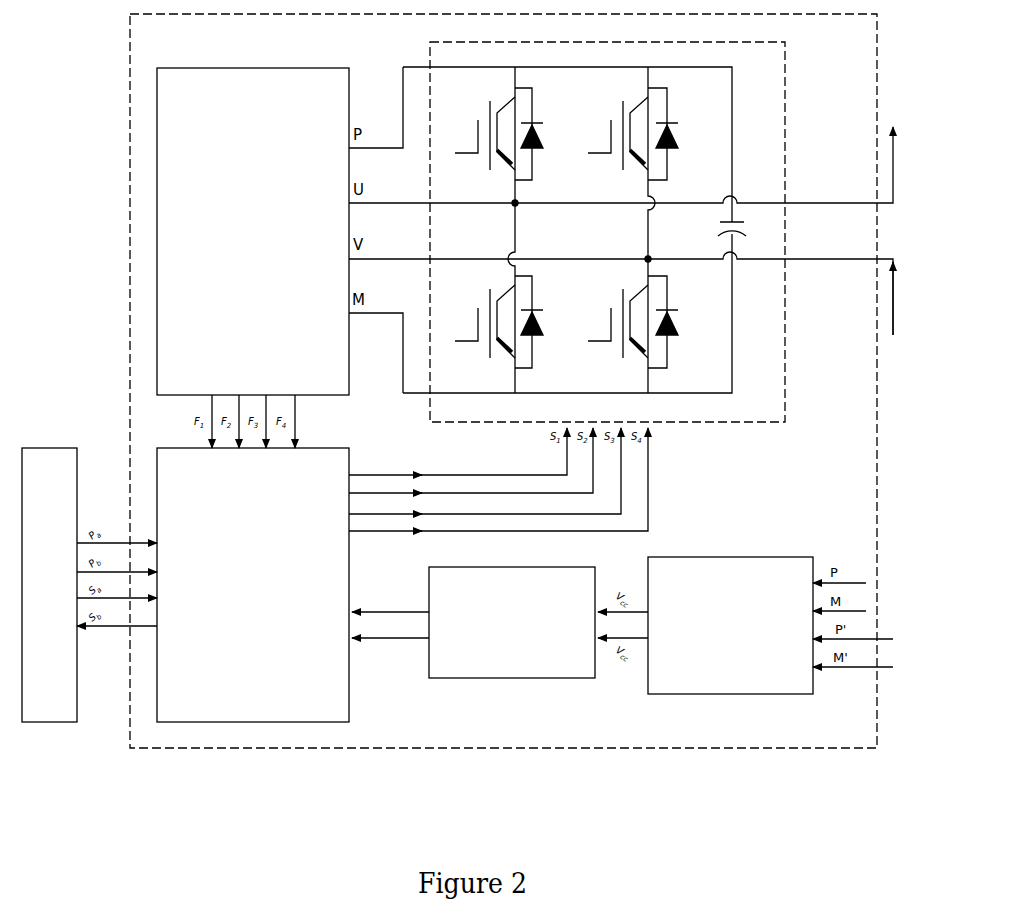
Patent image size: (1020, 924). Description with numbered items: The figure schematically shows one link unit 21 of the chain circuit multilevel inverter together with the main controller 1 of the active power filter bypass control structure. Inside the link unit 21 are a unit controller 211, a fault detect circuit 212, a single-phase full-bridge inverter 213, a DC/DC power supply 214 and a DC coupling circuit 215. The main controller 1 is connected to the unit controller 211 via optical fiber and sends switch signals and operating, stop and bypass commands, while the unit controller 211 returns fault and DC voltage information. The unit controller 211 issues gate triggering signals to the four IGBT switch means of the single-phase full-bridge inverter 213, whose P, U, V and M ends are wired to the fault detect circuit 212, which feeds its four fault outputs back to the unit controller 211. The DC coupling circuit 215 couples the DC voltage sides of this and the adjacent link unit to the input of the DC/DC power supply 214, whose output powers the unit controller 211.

The main controller 1 is at (49, 554).
The link unit 21 is at (503, 381).
The unit controller 211 is at (253, 585).
The fault detect circuit 212 is at (253, 231).
The single-phase full-bridge inverter 213 is at (594, 232).
The DC/DC power supply 214 is at (512, 622).
The DC coupling circuit 215 is at (730, 625).